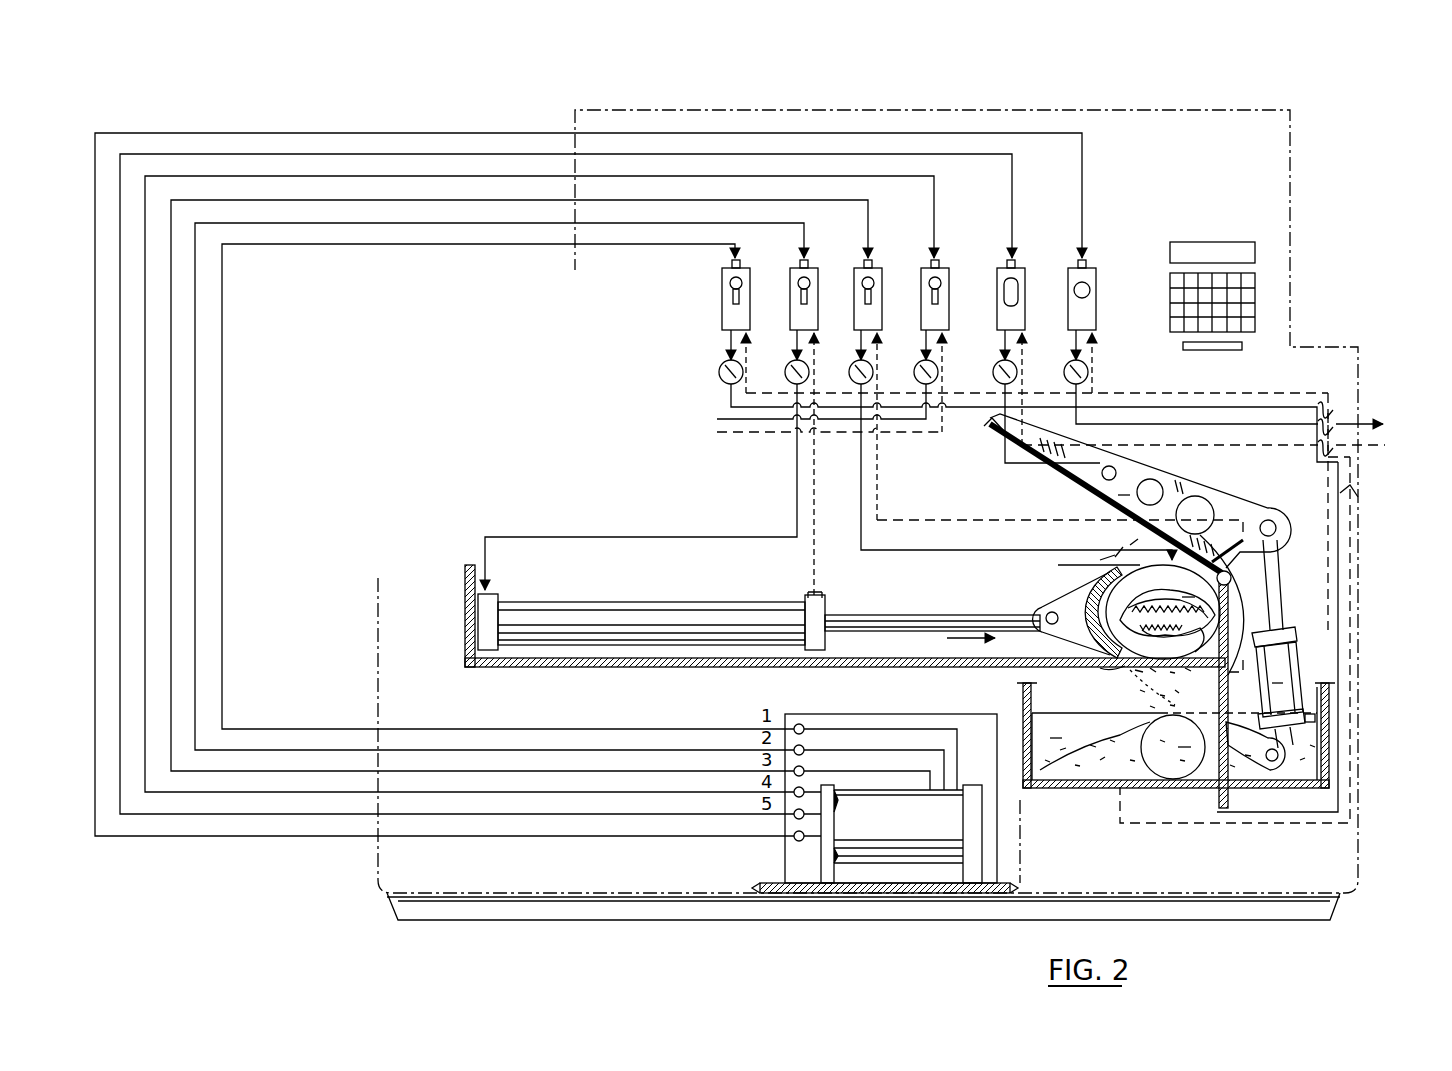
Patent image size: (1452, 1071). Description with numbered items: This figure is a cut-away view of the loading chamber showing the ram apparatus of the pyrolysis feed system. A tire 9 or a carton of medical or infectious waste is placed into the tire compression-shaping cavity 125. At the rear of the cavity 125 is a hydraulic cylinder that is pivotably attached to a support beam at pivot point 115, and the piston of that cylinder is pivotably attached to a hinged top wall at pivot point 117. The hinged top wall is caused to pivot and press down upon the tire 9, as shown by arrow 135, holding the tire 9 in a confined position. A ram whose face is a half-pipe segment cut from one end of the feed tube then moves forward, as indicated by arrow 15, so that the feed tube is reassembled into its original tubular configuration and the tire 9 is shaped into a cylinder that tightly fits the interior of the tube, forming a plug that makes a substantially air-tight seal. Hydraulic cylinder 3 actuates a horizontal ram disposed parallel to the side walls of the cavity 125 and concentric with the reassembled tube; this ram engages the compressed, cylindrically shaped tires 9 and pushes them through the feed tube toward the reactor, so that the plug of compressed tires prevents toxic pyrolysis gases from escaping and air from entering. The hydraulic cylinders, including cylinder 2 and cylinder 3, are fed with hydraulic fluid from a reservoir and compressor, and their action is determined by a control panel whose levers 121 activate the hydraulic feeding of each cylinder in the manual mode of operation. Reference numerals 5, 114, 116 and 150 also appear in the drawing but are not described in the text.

The hydraulic cylinder 2 is at (788, 633).
The hydraulic cylinder 3 is at (1139, 623).
The collecting bin with roller 5 is at (1176, 735).
The tire 9 is at (1122, 668).
The arrow 15 is at (966, 645).
The support post 114 is at (1233, 792).
The pivot point 115 is at (1280, 752).
The hydraulic cylinder 116 is at (1282, 594).
The pivot point 117 is at (1276, 528).
The levers 121 is at (790, 272).
The cavity 125 is at (1058, 496).
The arrow 135 is at (955, 575).
The machine frame 150 is at (1305, 491).